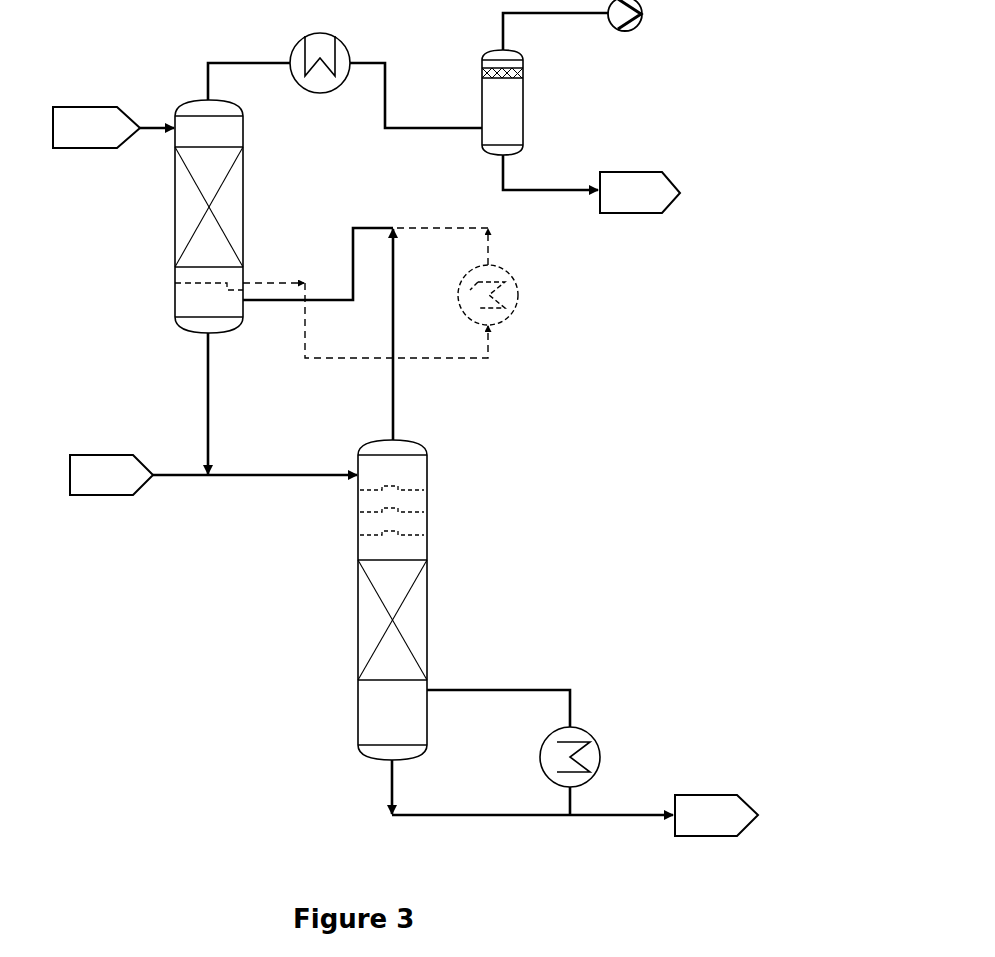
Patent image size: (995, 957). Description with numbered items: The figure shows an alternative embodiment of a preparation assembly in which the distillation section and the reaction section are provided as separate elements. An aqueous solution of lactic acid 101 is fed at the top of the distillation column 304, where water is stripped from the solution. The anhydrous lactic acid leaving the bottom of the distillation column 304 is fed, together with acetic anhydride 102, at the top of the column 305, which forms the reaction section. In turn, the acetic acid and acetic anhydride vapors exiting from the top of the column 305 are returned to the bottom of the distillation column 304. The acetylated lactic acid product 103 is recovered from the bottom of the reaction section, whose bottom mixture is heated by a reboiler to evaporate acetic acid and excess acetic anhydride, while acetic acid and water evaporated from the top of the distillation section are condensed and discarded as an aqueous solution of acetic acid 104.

The aqueous solution of lactic acid 101 is at (113, 127).
The acetic anhydride 102 is at (213, 475).
The (S)-2-acetyloxypropionic acid 103 is at (575, 815).
The aqueous solution of acetic acid 104 is at (640, 192).
The distillation column 304 is at (243, 193).
The column 305 is at (427, 553).